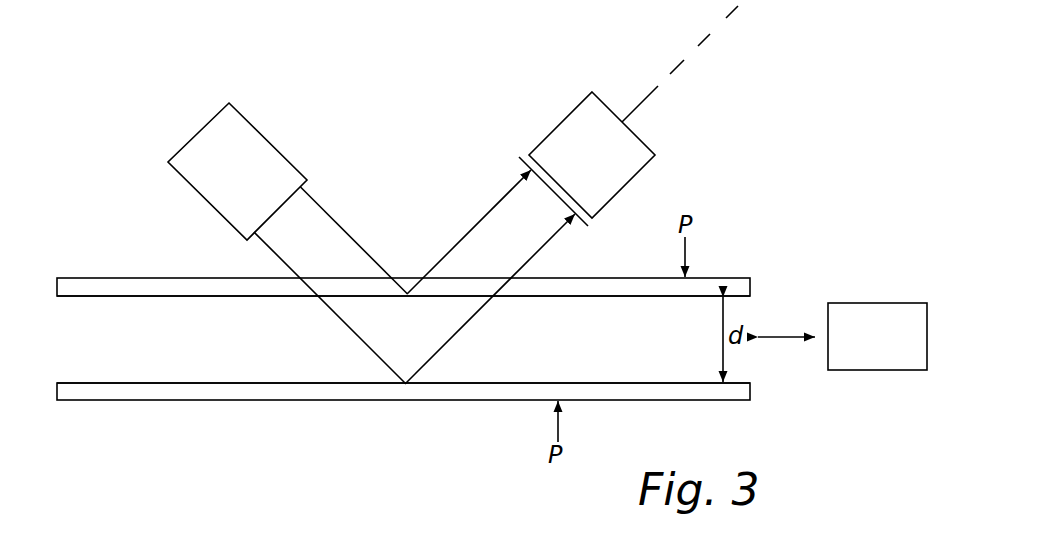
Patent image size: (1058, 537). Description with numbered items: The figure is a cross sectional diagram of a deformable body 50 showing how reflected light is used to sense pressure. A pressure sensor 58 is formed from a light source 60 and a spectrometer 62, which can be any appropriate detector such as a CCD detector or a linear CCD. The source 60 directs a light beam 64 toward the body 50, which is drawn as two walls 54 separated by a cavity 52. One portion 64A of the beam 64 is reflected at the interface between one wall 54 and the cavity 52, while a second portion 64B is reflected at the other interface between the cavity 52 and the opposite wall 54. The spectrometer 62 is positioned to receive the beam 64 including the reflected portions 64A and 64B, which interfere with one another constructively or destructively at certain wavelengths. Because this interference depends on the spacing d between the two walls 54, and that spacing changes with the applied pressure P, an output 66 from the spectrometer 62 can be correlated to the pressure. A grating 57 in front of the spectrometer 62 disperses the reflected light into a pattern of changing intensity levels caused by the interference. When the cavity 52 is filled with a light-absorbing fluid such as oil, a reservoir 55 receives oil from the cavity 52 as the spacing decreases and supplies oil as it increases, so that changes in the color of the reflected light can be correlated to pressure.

The deformable body 50 is at (313, 414).
The cavity 52 is at (110, 342).
The wall 54 is at (593, 383).
The reservoir 55 is at (877, 303).
The grating 57 is at (548, 191).
The pressure sensor 58 is at (74, 94).
The light source 60 is at (197, 190).
The spectrometer 62 is at (551, 132).
The light beam 64 is at (408, 234).
The first reflected portion 64A is at (351, 237).
The second reflected portion 64B is at (353, 334).
The output 66 is at (632, 112).